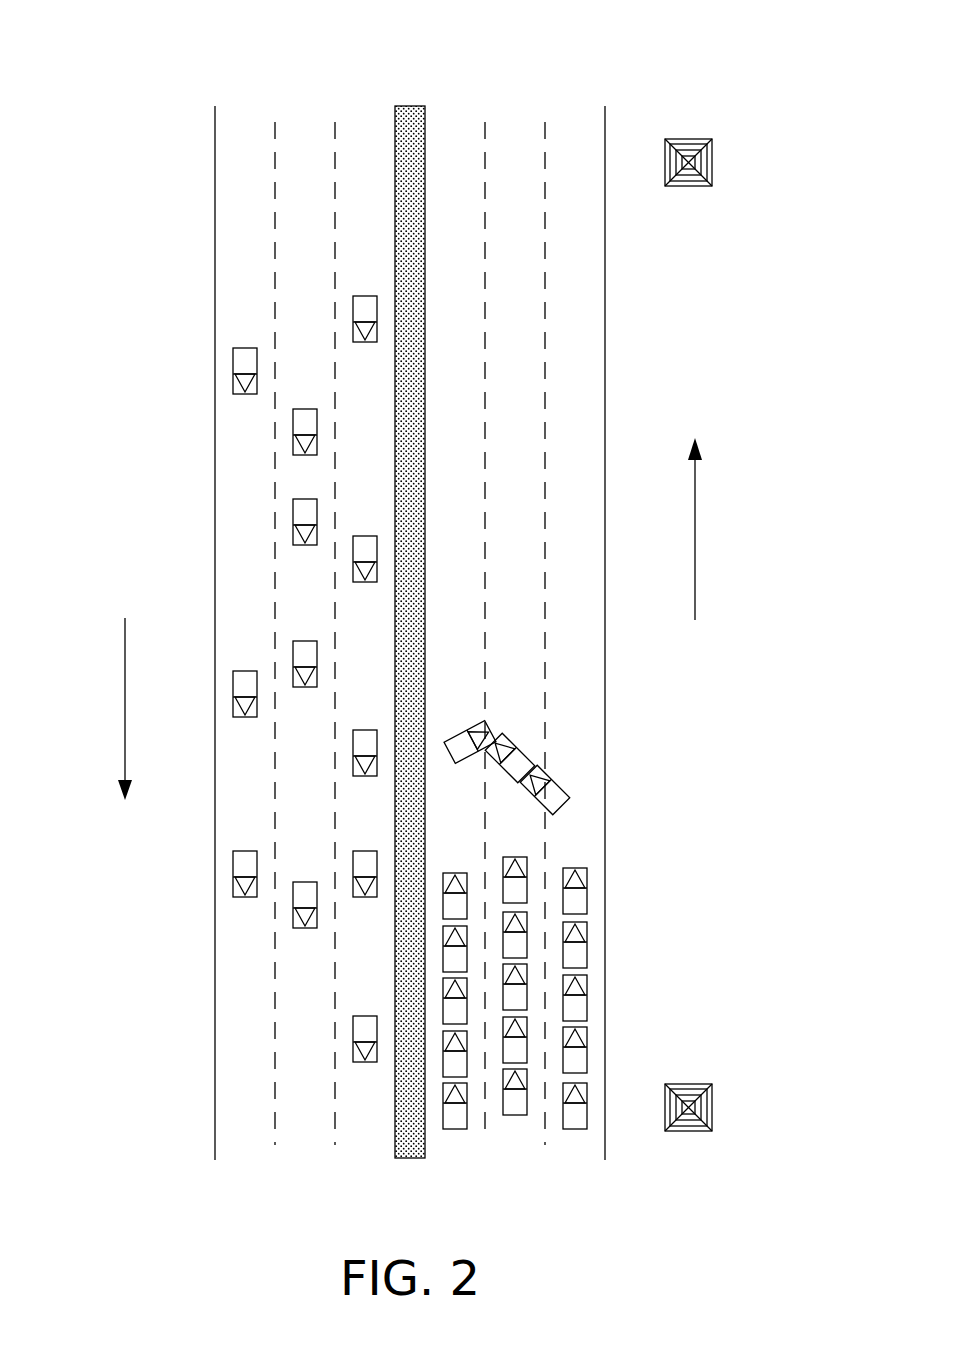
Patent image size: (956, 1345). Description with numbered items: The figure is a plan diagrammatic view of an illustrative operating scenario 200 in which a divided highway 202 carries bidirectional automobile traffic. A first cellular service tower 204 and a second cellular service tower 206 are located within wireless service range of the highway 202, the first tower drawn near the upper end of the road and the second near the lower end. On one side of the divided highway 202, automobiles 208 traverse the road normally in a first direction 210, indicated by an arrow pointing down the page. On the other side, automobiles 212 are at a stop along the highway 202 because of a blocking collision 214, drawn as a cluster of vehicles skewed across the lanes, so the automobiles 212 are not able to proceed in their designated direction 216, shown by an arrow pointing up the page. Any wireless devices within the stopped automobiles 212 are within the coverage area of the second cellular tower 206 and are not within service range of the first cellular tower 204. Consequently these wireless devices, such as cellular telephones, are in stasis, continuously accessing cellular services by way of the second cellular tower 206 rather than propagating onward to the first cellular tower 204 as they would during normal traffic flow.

The operating scenario 200 is at (549, 36).
The divided highway 202 is at (605, 358).
The first cellular service tower 204 is at (712, 156).
The second cellular service tower 206 is at (712, 1100).
The automobiles 208 is at (294, 513).
The first direction 210 is at (123, 693).
The automobiles 212 is at (588, 890).
The blocking collision 214 is at (568, 768).
The designated direction 216 is at (697, 518).